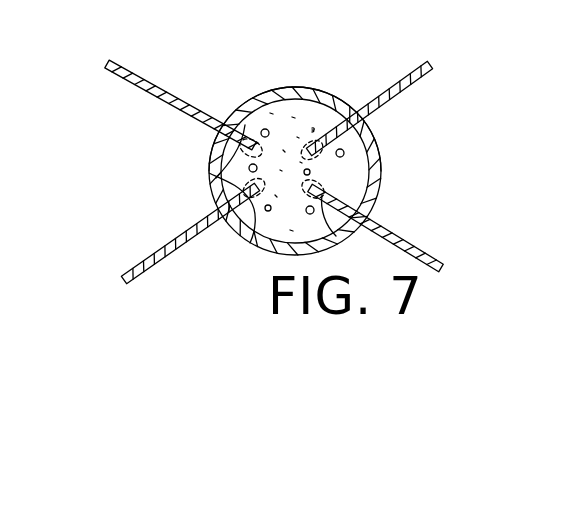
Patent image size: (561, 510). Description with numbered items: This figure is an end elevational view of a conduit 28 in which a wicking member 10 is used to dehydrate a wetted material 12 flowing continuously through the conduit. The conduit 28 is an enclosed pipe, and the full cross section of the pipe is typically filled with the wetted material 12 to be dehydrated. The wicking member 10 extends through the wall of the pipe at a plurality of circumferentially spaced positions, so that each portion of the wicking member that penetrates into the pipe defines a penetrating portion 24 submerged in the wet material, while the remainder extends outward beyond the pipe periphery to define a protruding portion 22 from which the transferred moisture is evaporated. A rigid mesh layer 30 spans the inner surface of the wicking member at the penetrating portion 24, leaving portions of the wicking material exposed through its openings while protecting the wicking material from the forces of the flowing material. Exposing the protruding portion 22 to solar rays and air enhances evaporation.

The wicking member 10 is at (433, 52).
The wetted material 12 is at (345, 170).
The protruding portion 22 is at (152, 82).
The penetrating portion 24 is at (242, 152).
The conduit 28 is at (284, 86).
The rigid mesh layer 30 is at (245, 125).